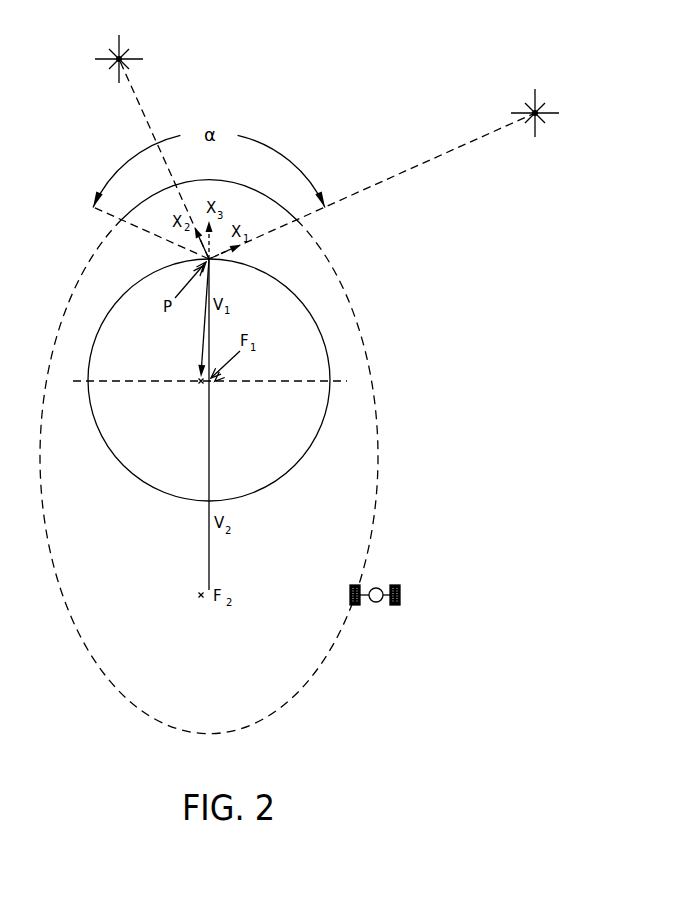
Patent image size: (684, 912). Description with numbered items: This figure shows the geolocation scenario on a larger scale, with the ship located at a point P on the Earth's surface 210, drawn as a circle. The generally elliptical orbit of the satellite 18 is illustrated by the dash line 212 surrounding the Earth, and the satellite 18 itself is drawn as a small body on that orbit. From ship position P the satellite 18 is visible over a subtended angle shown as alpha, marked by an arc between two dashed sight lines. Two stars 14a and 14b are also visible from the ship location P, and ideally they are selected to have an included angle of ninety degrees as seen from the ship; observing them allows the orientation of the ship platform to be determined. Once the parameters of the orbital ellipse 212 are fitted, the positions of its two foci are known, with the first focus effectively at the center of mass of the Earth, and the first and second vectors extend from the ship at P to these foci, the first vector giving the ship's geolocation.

The star 14a is at (546, 111).
The star 14b is at (131, 57).
The satellite 18 is at (402, 581).
The Earth's surface 210 is at (293, 468).
The satellite orbital ellipse 212 is at (378, 468).